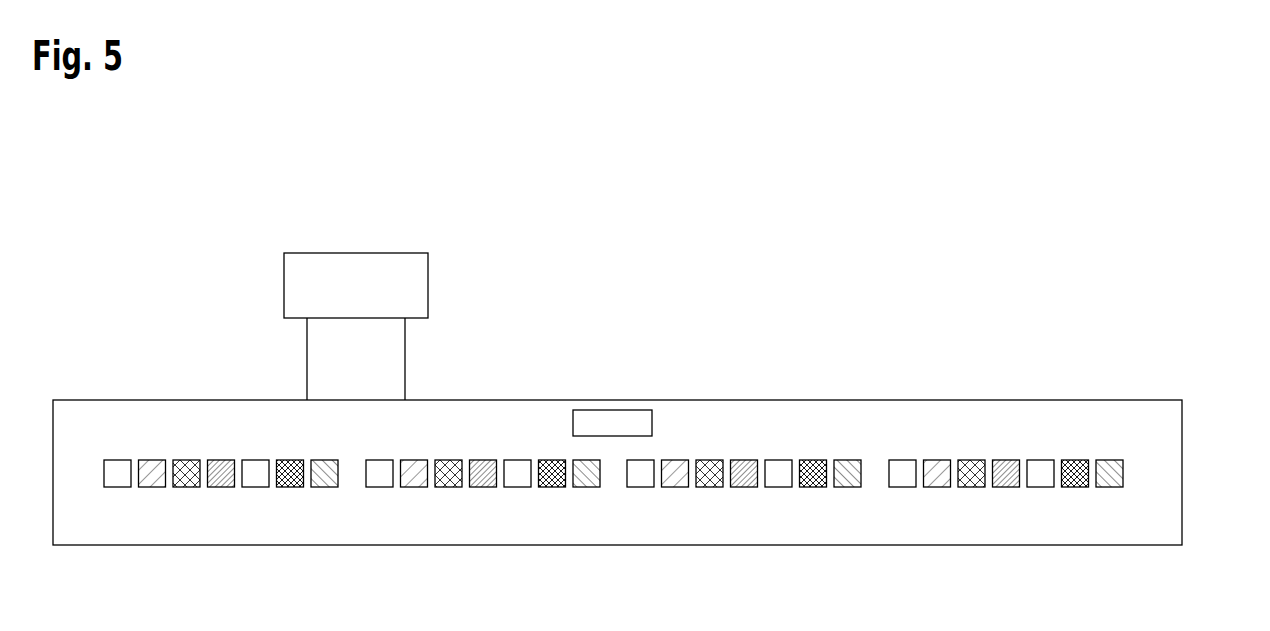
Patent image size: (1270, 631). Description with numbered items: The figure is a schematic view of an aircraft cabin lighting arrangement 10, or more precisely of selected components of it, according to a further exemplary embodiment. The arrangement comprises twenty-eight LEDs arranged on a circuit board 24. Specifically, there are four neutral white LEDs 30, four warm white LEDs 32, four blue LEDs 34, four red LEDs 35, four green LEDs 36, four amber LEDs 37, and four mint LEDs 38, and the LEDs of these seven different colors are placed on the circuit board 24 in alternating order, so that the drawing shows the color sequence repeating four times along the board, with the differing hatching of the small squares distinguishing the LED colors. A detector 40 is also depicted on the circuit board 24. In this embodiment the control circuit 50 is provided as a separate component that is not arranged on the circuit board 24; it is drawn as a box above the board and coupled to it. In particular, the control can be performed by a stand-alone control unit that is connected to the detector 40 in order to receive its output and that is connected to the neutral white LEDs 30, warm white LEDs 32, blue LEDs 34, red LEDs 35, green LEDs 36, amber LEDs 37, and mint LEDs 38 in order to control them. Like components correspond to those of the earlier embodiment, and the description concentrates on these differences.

The aircraft cabin lighting arrangement 10 is at (742, 287).
The circuit board 24 is at (1183, 447).
The neutral white LED 30 is at (256, 487).
The warm white LED 32 is at (118, 487).
The blue LED 34 is at (152, 487).
The red LED 35 is at (186, 487).
The green LED 36 is at (221, 487).
The amber LED 37 is at (290, 487).
The mint LED 38 is at (324, 487).
The detector 40 is at (611, 410).
The control circuit 50 is at (356, 253).